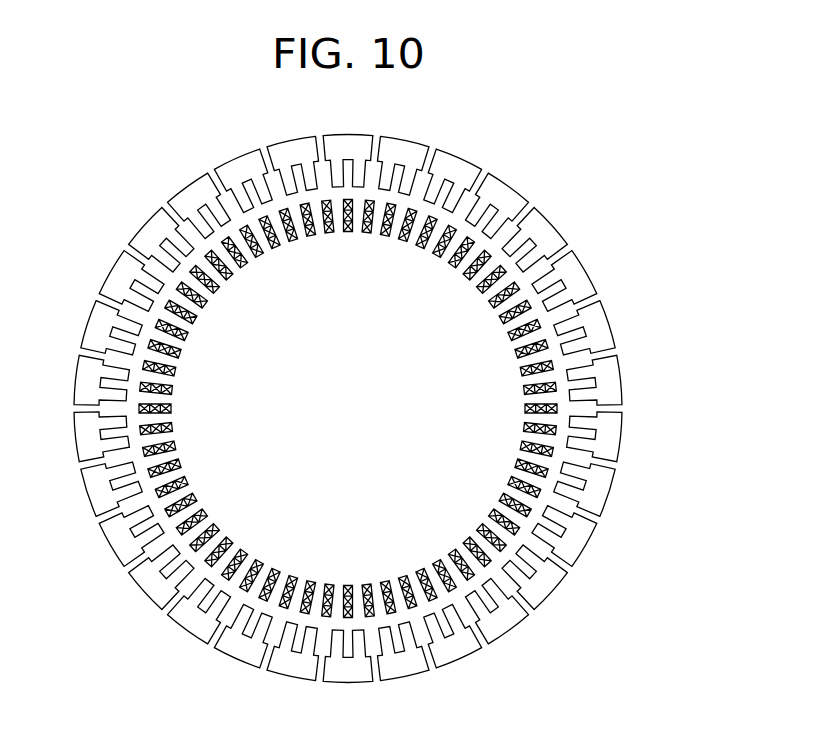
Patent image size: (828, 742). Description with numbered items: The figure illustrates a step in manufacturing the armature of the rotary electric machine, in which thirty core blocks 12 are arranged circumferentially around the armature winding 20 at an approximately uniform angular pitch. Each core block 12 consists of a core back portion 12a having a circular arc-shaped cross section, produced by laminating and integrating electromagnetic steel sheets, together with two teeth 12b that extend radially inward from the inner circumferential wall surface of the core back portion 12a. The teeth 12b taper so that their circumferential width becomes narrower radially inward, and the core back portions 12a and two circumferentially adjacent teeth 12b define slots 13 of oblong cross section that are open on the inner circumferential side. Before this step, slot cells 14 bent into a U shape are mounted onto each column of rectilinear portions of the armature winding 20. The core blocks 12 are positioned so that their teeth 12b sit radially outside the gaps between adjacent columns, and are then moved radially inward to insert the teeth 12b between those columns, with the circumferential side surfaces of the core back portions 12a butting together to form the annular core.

The core block 12 is at (382, 409).
The core back portion 12a is at (584, 288).
The teeth 12b is at (546, 278).
The slot 13 is at (598, 331).
The slot cell 14 is at (502, 313).
The armature winding 20 is at (522, 394).